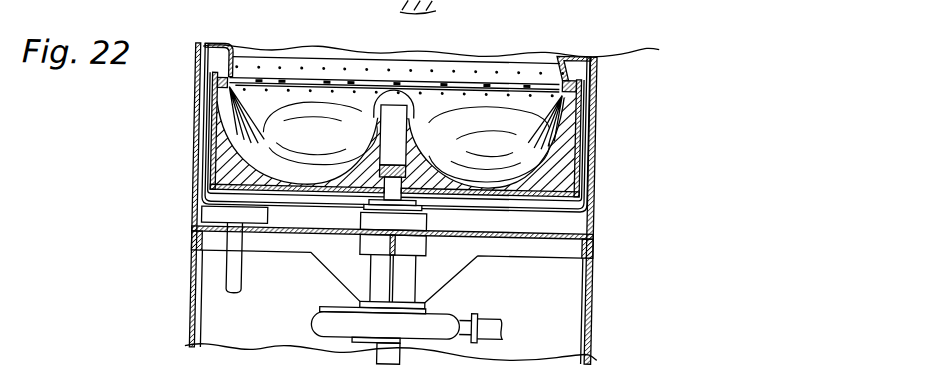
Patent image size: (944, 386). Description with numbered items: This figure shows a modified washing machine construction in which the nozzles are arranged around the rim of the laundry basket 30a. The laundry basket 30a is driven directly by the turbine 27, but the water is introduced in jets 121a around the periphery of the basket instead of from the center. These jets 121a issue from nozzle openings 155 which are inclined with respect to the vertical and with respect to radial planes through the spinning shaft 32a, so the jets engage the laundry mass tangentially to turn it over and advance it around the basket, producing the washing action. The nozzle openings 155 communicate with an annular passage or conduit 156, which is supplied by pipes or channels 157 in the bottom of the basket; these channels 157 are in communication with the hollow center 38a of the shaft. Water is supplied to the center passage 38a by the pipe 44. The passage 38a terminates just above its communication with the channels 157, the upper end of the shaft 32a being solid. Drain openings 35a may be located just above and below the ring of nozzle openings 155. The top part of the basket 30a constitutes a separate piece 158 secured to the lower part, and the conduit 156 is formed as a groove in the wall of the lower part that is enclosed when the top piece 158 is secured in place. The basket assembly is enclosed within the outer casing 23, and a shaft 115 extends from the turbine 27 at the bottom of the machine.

The outer casing 23 is at (590, 196).
The turbine 27 is at (315, 325).
The laundry basket 30a is at (578, 131).
The spinning shaft 32a is at (418, 99).
The drain openings 35a is at (290, 92).
The hollow center of the shaft 38a is at (392, 193).
The pipe 44 is at (388, 362).
The drive shaft 115 is at (505, 323).
The jets 121a is at (221, 114).
The nozzle openings 155 is at (340, 84).
The annular passage or conduit 156 is at (587, 56).
The pipes or channels 157 is at (574, 169).
The separate piece 158 is at (219, 49).